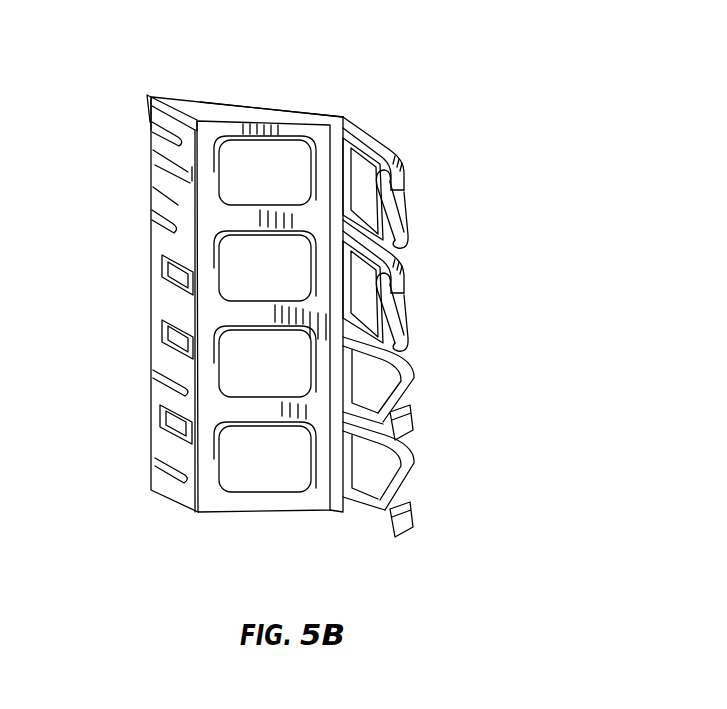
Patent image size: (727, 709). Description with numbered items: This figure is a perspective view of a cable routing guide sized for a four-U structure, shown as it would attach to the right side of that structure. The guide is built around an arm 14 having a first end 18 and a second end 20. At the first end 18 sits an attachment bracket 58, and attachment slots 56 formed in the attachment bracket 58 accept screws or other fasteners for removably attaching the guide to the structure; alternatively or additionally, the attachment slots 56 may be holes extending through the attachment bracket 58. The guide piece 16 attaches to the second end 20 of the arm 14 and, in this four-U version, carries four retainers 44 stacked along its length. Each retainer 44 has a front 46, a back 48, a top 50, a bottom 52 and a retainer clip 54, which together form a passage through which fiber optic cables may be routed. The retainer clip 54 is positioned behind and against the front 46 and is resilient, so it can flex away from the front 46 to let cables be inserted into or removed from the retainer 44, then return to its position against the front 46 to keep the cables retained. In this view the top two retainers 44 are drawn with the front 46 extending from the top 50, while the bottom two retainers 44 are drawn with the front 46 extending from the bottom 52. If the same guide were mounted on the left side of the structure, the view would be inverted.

The arm 14 is at (284, 110).
The guide piece 16 is at (378, 136).
The first end 18 is at (170, 103).
The second end 20 is at (343, 115).
The retainer 44 is at (422, 206).
The front 46 is at (406, 174).
The back 48 is at (350, 168).
The top 50 is at (398, 152).
The bottom 52 is at (352, 213).
The retainer clip 54 is at (412, 224).
The attachment slots 56 is at (165, 140).
The attachment bracket 58 is at (157, 100).